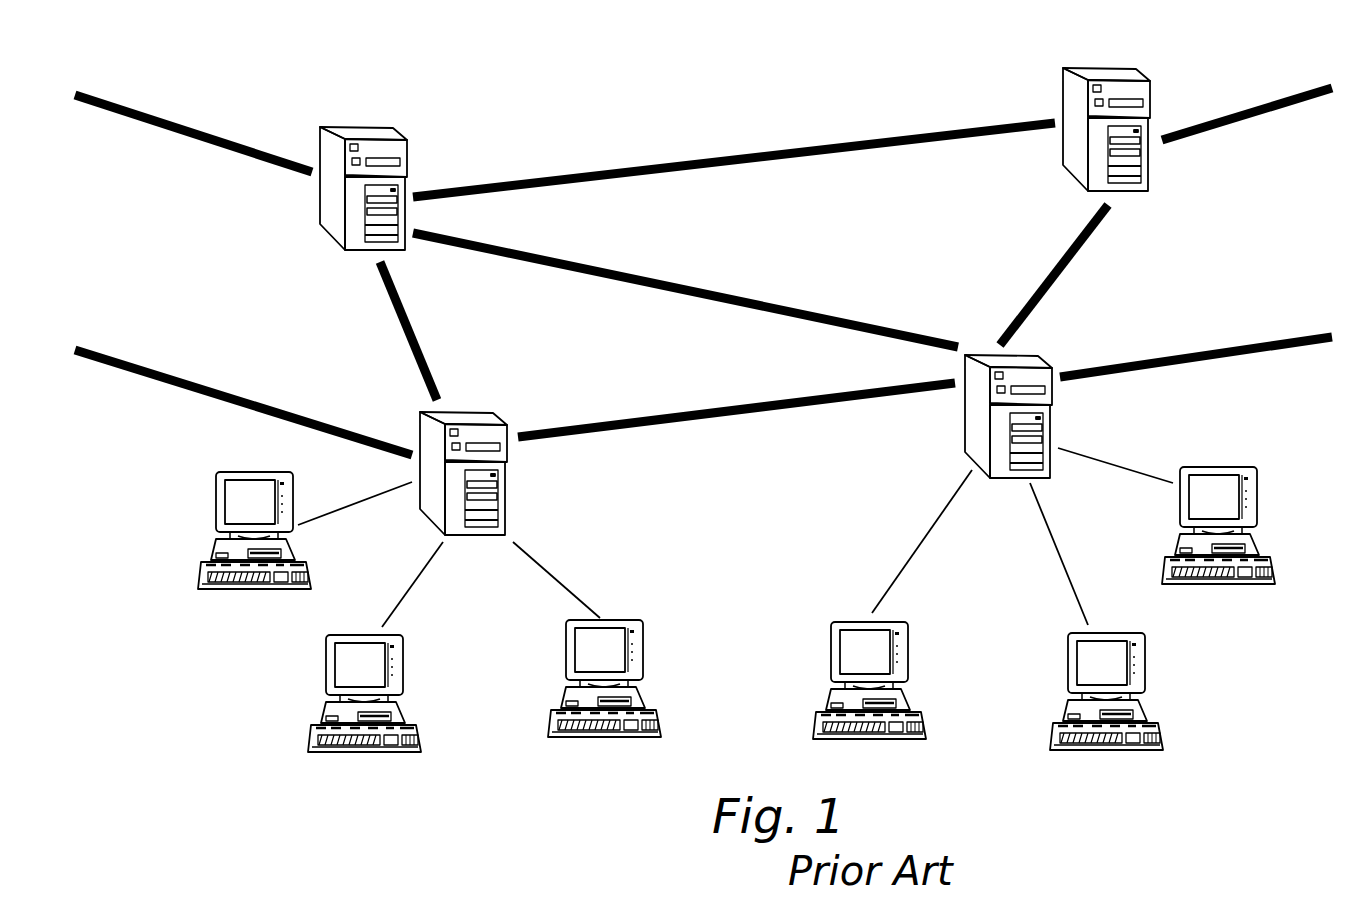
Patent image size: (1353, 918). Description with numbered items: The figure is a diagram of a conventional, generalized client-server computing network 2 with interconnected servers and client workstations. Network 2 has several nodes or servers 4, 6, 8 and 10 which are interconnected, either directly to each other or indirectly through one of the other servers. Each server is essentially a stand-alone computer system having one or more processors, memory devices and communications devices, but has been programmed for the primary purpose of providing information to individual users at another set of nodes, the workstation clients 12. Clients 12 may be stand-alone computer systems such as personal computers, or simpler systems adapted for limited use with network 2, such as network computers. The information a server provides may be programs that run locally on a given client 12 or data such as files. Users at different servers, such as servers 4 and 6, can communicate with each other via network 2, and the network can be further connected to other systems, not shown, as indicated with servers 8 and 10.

The client-server computing network 2 is at (233, 750).
The server 4 is at (506, 483).
The server 6 is at (978, 422).
The server 8 is at (333, 192).
The server 10 is at (1078, 70).
The workstation client 12 is at (382, 757).